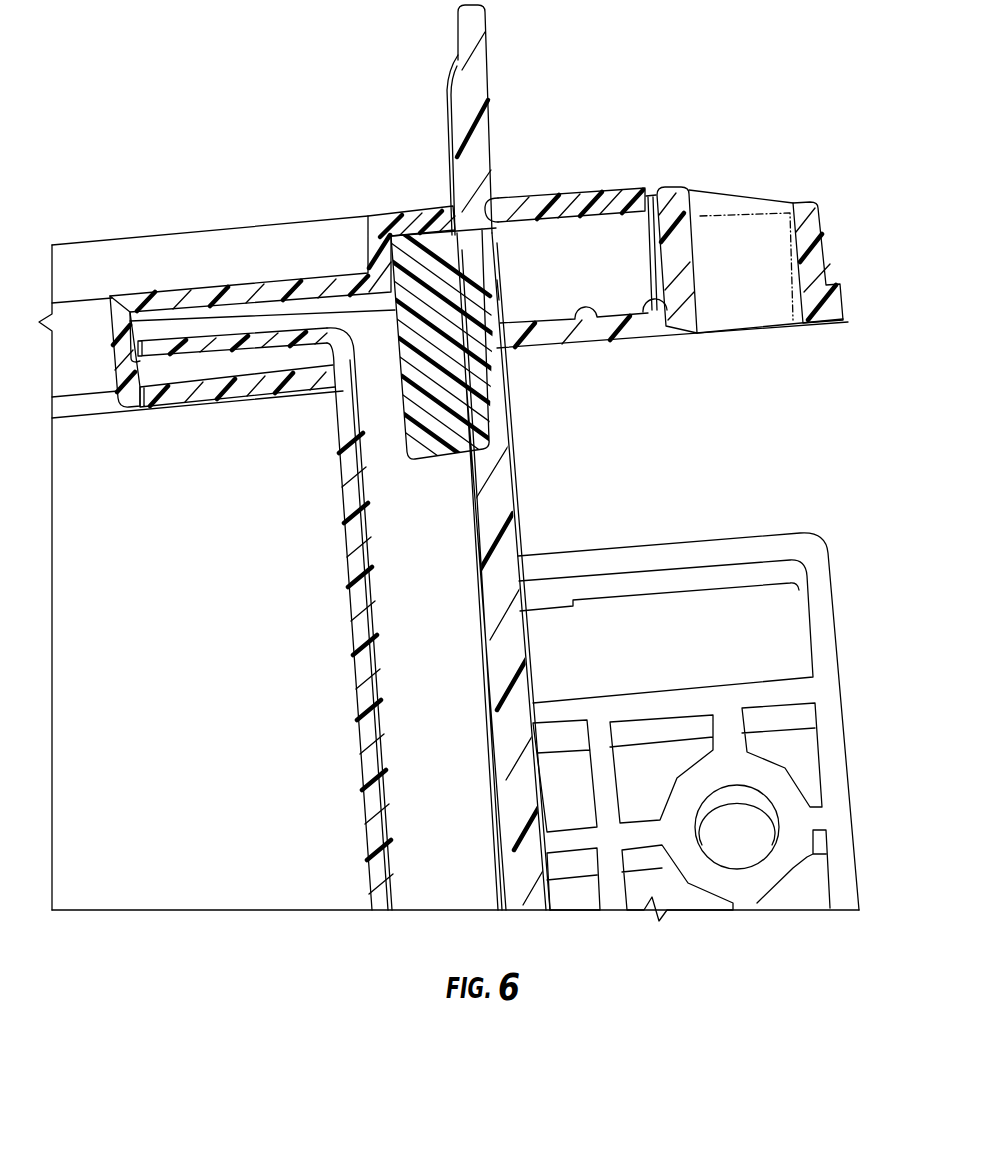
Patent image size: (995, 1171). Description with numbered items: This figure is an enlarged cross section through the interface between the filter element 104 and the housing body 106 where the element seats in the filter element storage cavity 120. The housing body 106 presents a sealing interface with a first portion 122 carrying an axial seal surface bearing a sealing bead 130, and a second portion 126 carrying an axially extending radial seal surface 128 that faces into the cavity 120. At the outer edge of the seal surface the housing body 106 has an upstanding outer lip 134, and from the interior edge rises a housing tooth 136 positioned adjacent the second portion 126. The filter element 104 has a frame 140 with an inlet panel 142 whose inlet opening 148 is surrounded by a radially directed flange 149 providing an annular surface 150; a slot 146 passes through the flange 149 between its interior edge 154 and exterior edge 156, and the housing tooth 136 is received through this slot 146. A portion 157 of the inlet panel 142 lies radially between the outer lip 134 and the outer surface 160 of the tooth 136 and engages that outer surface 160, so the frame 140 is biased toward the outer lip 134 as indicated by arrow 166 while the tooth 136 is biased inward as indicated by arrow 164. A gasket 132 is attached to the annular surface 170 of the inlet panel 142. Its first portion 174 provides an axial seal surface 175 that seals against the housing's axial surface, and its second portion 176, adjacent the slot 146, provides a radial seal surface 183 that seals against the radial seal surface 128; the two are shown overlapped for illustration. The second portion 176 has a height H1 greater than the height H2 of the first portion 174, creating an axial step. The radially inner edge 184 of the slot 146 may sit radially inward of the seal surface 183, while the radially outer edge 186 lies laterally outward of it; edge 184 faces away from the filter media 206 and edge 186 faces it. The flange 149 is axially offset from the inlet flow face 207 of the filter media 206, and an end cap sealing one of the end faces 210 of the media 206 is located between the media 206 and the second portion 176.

The filter element 104 is at (425, 636).
The housing body 106 is at (503, 473).
The filter element storage cavity 120 is at (438, 732).
The first portion of the first housing sealing interface 122 is at (670, 300).
The second portion of the first housing sealing interface 126 is at (342, 407).
The radial seal surface 128 is at (480, 390).
The sealing bead 130 is at (583, 304).
The gasket 132 is at (413, 452).
The outer lip 134 is at (684, 190).
The housing tooth 136 is at (477, 38).
The frame 140 is at (153, 257).
The inlet panel 142 is at (419, 212).
The slot 146 is at (503, 192).
The inlet opening 148 is at (85, 296).
The radially directed flange 149 is at (606, 198).
The annular surface 150 is at (415, 212).
The interior edge 154 is at (366, 212).
The exterior edge 156 is at (672, 205).
The portion of the inlet panel 157 is at (568, 196).
The outer surface 160 is at (486, 104).
The arrow 164 is at (647, 159).
The arrow 166 is at (648, 133).
The annular surface 170 is at (557, 232).
The first portion of the gasket 174 is at (612, 238).
The axial seal surface 175 is at (637, 320).
The second portion of the gasket 176 is at (497, 281).
The radial seal surface 183 is at (497, 309).
The radially inner edge 184 is at (435, 226).
The radially outer edge 186 is at (468, 232).
The filter media 206 is at (207, 696).
The inlet flow face 207 is at (185, 343).
The end faces 210 is at (362, 726).
The height of the second portion H1 is at (457, 462).
The height of the first portion H2 is at (542, 325).